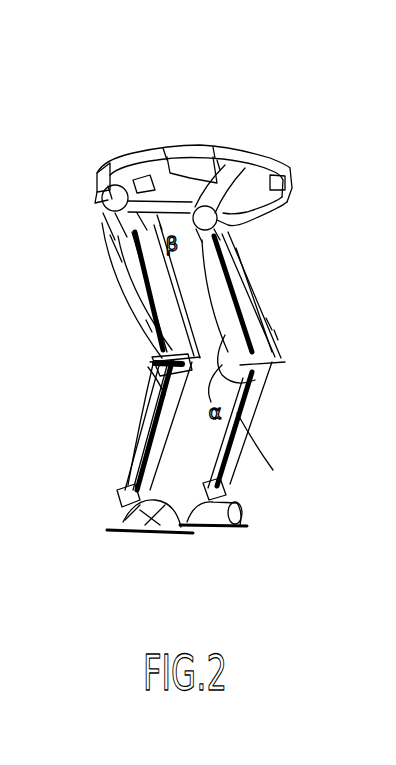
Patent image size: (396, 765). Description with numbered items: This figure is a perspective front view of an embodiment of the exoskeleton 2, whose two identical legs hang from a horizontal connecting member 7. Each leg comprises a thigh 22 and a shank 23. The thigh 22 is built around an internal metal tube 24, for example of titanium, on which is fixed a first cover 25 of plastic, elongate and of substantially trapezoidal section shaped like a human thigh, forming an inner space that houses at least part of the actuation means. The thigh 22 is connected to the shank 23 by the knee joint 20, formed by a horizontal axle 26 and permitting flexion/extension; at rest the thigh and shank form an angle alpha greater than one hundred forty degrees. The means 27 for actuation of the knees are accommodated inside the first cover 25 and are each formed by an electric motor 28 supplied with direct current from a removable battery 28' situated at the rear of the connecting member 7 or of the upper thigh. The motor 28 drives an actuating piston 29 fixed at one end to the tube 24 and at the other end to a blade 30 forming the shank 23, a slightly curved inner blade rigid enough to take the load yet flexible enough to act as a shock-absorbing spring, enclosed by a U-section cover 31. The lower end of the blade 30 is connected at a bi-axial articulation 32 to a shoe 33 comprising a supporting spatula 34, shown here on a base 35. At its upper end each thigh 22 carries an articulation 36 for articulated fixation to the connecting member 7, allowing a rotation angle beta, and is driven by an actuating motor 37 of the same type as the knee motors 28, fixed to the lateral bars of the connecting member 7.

The exoskeleton 2 is at (278, 148).
The connecting member 7 is at (182, 160).
The knee joint 20 is at (153, 392).
The thigh 22 is at (137, 292).
The shank 23 is at (150, 422).
The internal metal tube 24 is at (130, 280).
The first cover 25 is at (277, 335).
The horizontal axle 26 is at (150, 362).
The means for actuation of the knees 27 is at (148, 322).
The electric motor 28 is at (199, 288).
The removable battery 28' is at (80, 196).
The actuating piston 29 is at (148, 367).
The blade 30 is at (147, 443).
The cover 31 is at (262, 458).
The articulation 32 is at (122, 493).
The shoe 33 is at (158, 535).
The supporting spatula 34 is at (240, 532).
The base plate 35 is at (123, 540).
The articulation 36 is at (115, 190).
The actuating motor 37 is at (140, 177).